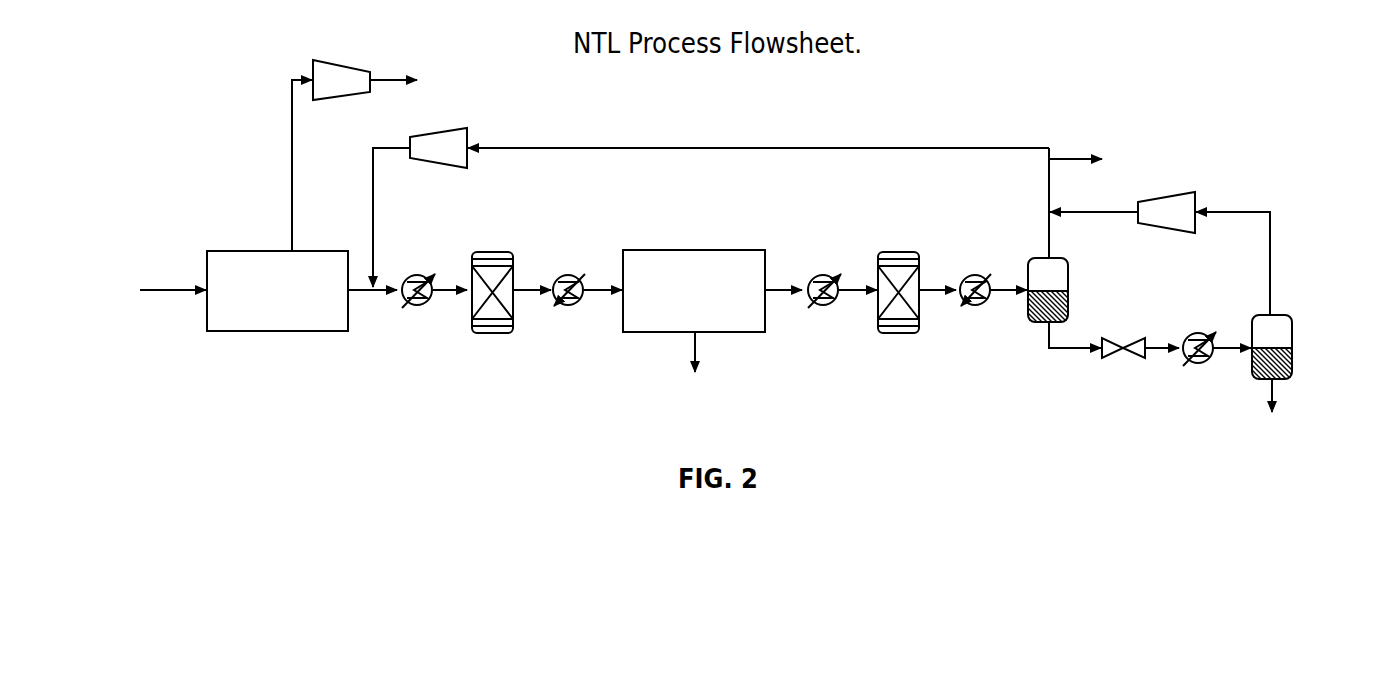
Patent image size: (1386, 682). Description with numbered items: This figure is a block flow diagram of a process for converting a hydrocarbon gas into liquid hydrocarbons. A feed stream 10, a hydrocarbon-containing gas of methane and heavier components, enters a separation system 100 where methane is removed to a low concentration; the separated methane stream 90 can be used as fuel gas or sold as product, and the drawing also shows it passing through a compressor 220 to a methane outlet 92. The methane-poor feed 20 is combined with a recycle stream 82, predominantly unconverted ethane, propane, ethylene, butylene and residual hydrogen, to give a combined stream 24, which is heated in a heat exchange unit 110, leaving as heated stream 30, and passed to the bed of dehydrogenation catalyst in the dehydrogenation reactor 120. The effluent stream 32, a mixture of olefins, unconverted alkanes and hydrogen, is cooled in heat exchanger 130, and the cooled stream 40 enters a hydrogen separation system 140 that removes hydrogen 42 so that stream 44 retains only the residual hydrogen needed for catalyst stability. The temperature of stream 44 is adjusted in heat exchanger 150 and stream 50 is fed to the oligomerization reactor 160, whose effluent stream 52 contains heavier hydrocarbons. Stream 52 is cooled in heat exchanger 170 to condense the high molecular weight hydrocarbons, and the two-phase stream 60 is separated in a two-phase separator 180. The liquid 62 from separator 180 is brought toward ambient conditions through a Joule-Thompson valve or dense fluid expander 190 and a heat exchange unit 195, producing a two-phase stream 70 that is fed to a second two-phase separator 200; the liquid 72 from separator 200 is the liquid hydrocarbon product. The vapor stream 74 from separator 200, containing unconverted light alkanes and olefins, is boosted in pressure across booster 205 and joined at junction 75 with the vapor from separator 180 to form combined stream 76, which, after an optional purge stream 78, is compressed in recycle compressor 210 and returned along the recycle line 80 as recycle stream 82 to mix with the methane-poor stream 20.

The feed stream 10 is at (165, 288).
The separation system 100 is at (277, 331).
The separated methane stream 90 is at (290, 163).
The methane compressor 220 is at (340, 60).
The compressed CH4 product stream 92 is at (393, 78).
The C2+ recycle stream 80 is at (753, 148).
The recycle compressor 210 is at (468, 137).
The recycle stream 82 is at (375, 213).
The combined stream 24 is at (383, 288).
The methane-poor feed stream 20 is at (357, 295).
The heat exchange unit 110 is at (425, 272).
The heated feed stream 30 is at (433, 297).
The dehydrogenation reactor 120 is at (493, 250).
The dehydrogenation reactor effluent stream 32 is at (525, 297).
The heat exchanger 130 is at (577, 270).
The cooled stream 40 is at (600, 294).
The hydrogen separation system 140 is at (693, 250).
The hydrogen stream 42 is at (702, 352).
The hydrogen-depleted stream 44 is at (777, 287).
The heat exchanger 150 is at (825, 272).
The oligomerization feed stream 50 is at (853, 297).
The oligomerization reactor 160 is at (900, 250).
The oligomerization reactor effluent stream 52 is at (933, 297).
The heat exchanger 170 is at (982, 270).
The two-phase stream 60 is at (1007, 297).
The two-phase separator 180 is at (1068, 277).
The purge stream 78 is at (1070, 157).
The overhead recycle stream 75 is at (1050, 203).
The combined vapor stream 76 is at (1118, 213).
The booster 205 is at (1197, 197).
The vapor stream 74 is at (1273, 246).
The liquid stream 62 is at (1046, 335).
The Joule-Thompson valve or dense fluid expander 190 is at (1102, 362).
The heat exchange unit 195 is at (1197, 368).
The two-phase stream 70 is at (1233, 345).
The two-phase separator 200 is at (1292, 337).
The liquid product stream 72 is at (1278, 393).